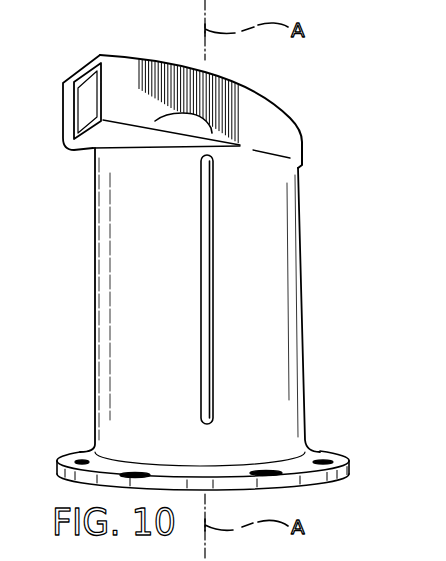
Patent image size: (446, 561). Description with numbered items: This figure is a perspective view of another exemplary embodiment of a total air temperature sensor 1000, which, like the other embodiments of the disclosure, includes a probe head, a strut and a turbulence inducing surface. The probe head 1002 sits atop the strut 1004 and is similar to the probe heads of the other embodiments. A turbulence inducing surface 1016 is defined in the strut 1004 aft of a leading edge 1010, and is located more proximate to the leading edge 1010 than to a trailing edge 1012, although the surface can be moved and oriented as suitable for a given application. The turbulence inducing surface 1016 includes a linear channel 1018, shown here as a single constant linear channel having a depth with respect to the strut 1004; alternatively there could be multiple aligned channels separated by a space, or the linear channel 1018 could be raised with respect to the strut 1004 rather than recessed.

The total air temperature sensor 1000 is at (320, 116).
The head portion with rectangular opening 1002 is at (177, 77).
The strut 1004 is at (263, 313).
The leading edge 1010 is at (94, 361).
The trailing edge 1012 is at (306, 402).
The turbulence inducing surface 1016 is at (183, 297).
The linear channel 1018 is at (213, 262).